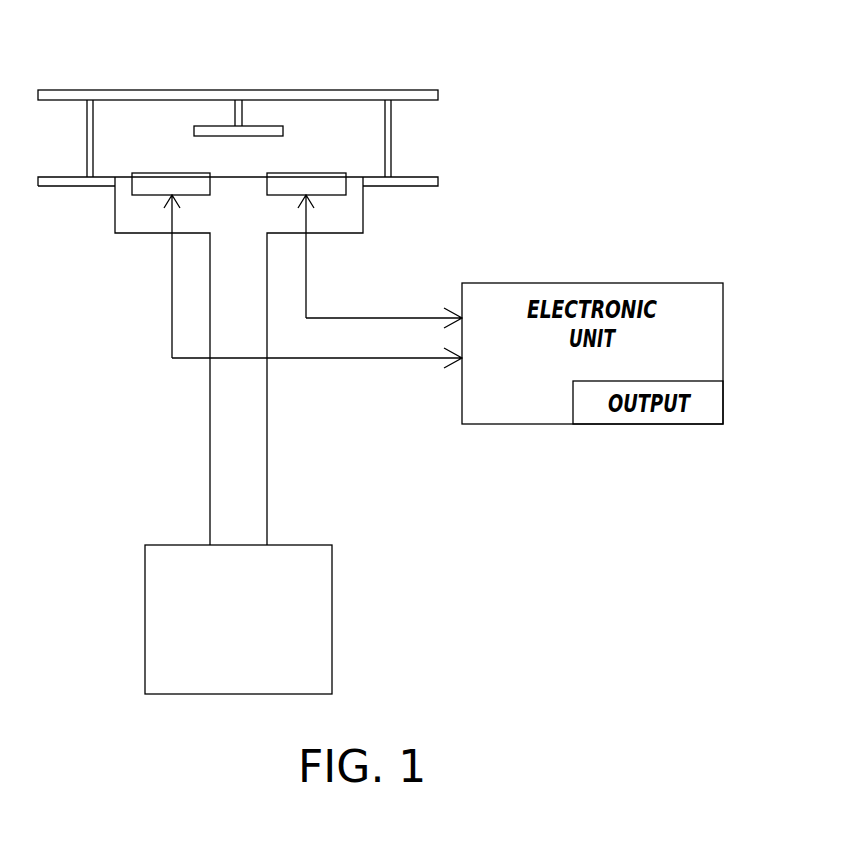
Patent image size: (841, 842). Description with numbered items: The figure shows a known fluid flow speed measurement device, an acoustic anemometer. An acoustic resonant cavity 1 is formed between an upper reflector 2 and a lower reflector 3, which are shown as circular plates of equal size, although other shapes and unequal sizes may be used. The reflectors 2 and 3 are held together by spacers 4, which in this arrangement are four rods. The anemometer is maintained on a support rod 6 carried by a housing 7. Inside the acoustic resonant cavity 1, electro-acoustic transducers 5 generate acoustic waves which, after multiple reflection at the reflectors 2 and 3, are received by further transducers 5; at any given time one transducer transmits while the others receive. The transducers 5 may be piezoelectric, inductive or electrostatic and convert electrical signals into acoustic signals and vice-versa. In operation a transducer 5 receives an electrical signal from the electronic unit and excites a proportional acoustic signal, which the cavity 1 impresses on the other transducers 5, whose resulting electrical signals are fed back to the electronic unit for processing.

The acoustic resonant cavity 1 is at (355, 148).
The upper reflector 2 is at (418, 90).
The lower reflector 3 is at (423, 187).
The spacers 4 is at (85, 137).
The electro-acoustic transducers 5 is at (175, 173).
The support rod 6 is at (267, 448).
The housing 7 is at (333, 575).